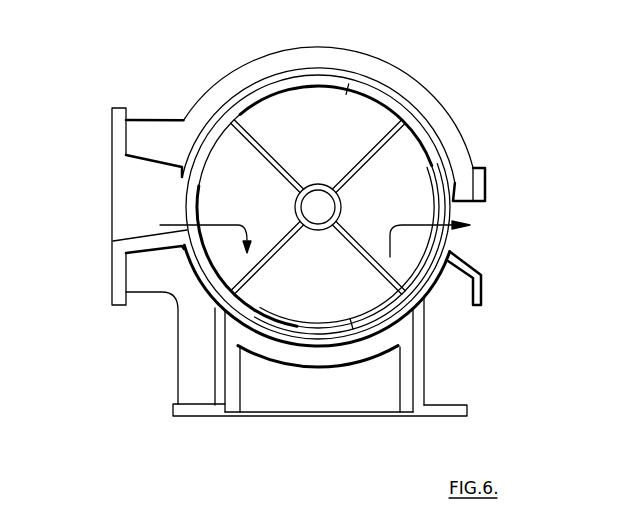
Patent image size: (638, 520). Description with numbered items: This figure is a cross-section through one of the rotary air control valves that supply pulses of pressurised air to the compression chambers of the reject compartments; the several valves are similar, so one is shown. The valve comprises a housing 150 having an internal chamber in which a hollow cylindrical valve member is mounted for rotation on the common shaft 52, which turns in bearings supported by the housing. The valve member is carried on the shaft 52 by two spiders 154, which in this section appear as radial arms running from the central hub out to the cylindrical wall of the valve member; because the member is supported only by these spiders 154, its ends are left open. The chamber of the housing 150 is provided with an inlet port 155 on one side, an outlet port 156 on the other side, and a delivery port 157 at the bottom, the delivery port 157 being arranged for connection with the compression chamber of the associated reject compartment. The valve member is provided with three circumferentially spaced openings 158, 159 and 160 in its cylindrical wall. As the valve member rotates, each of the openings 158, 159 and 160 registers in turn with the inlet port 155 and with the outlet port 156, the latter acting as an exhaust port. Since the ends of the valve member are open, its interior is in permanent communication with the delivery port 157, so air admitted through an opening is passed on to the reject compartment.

The common shaft 52 is at (327, 229).
The housing 150 is at (172, 127).
The spiders 154 is at (262, 266).
The inlet port 155 is at (118, 177).
The outlet port 156 is at (483, 267).
The delivery port 157 is at (332, 410).
The opening 158 is at (185, 192).
The opening 159 is at (404, 104).
The opening 160 is at (386, 316).